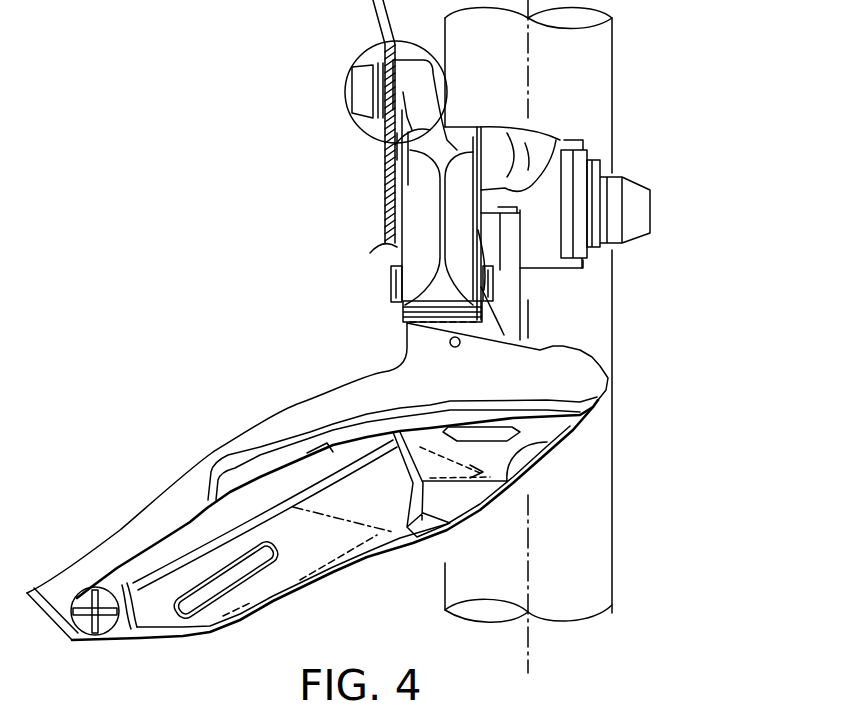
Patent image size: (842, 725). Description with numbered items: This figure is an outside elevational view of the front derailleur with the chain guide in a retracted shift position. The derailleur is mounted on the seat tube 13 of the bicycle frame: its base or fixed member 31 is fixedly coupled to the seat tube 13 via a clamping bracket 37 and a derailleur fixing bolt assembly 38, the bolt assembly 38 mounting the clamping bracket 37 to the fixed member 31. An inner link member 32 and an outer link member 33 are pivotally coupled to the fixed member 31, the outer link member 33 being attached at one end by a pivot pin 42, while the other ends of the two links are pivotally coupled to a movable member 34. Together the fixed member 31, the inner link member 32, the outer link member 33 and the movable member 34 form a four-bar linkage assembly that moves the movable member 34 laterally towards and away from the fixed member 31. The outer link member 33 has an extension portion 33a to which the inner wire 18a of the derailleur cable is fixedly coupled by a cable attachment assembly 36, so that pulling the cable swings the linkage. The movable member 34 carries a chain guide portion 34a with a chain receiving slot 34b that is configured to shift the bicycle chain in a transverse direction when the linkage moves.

The seat tube 13 is at (614, 529).
The inner wire 18a is at (384, 158).
The fixed member 31 is at (552, 129).
The inner link member 32 is at (506, 289).
The outer link member 33 is at (413, 204).
The extension portion 33a is at (423, 88).
The movable member 34 is at (303, 403).
The chain guide portion 34a is at (128, 515).
The chain receiving slot 34b is at (355, 537).
The cable attachment assembly 36 is at (360, 115).
The clamping bracket 37 is at (594, 152).
The derailleur fixing bolt assembly 38 is at (647, 184).
The pivot pin 42 is at (391, 279).